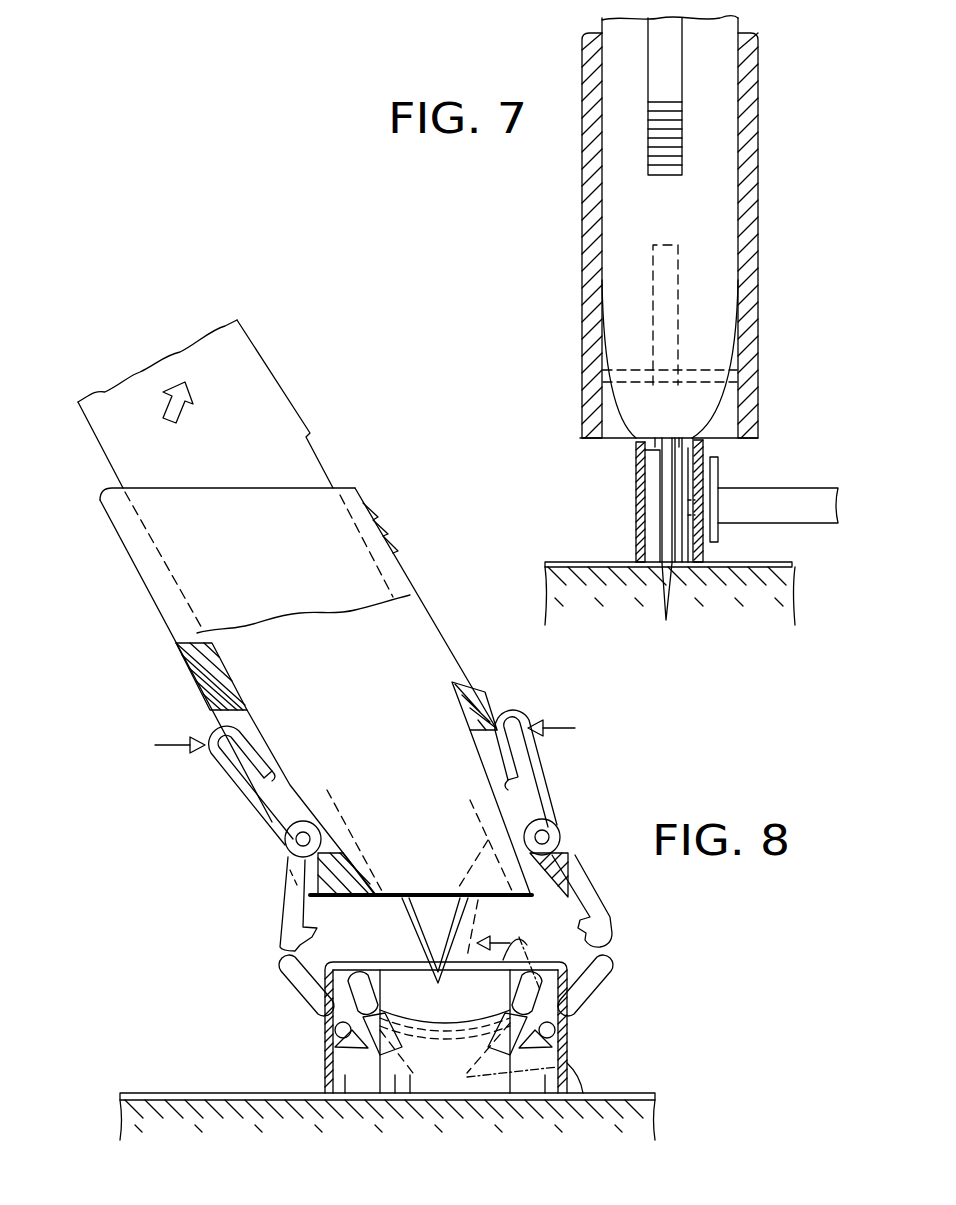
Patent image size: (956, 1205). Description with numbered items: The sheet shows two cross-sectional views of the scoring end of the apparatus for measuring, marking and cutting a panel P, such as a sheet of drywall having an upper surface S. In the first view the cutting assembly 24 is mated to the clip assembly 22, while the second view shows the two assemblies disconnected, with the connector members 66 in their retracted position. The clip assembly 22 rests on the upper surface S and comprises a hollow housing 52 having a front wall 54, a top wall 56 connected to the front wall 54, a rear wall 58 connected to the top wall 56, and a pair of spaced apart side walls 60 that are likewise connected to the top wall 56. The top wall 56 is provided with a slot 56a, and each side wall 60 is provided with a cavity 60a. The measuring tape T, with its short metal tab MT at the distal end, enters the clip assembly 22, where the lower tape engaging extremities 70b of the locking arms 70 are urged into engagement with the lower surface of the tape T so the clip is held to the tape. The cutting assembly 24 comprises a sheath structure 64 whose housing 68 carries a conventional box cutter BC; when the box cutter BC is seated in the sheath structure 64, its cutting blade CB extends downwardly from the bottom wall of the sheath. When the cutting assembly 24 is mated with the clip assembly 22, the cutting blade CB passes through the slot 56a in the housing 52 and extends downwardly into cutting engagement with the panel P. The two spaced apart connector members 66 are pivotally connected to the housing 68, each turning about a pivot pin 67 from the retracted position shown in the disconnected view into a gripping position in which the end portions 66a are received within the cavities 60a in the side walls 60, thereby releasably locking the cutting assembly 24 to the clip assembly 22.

In FIG. 7, the clip assembly 22 is at (694, 535).
In FIG. 8, the clip assembly 22 is at (438, 1036).
In FIG. 7, the cutting assembly 24 is at (659, 240).
In FIG. 8, the cutting assembly 24 is at (325, 670).
In FIG. 7, the hollow housing 52 is at (633, 522).
In FIG. 8, the hollow housing 52 is at (572, 1053).
In FIG. 7, the front wall 54 is at (636, 498).
In FIG. 8, the top wall 56 is at (466, 960).
In FIG. 7, the slot 56a is at (665, 440).
In FIG. 8, the slot 56a is at (380, 960).
In FIG. 7, the rear wall 58 is at (698, 462).
In FIG. 8, the rear wall 58 is at (352, 1077).
In FIG. 8, the side walls 60 is at (324, 1072).
In FIG. 8, the cavity 60a is at (327, 1010).
In FIG. 7, the sheath structure 64 is at (577, 288).
In FIG. 8, the sheath structure 64 is at (170, 602).
In FIG. 7, the connector members 66 is at (662, 250).
In FIG. 8, the connector members 66 is at (217, 755).
In FIG. 8, the end portion 66a is at (290, 933).
In FIG. 8, the pivot pin 67 is at (296, 839).
In FIG. 7, the housing 68 is at (741, 310).
In FIG. 8, the housing 68 is at (462, 706).
In FIG. 7, the locking arms 70 is at (698, 504).
In FIG. 8, the locking arms 70 is at (280, 963).
In FIG. 8, the lower tape engaging extremities 70b is at (400, 1060).
In FIG. 7, the box cutter BC is at (605, 215).
In FIG. 8, the box cutter BC is at (257, 362).
In FIG. 7, the cutting blade CB is at (657, 585).
In FIG. 8, the cutting blade CB is at (430, 920).
In FIG. 7, the metal tab MT is at (684, 538).
In FIG. 8, the metal tab MT is at (402, 1080).
In FIG. 7, the upper surface S is at (572, 562).
In FIG. 8, the upper surface S is at (196, 1093).
In FIG. 7, the panel P is at (772, 606).
In FIG. 8, the panel P is at (125, 1106).
In FIG. 7, the measuring tape T is at (824, 514).
In FIG. 8, the measuring tape T is at (437, 1028).